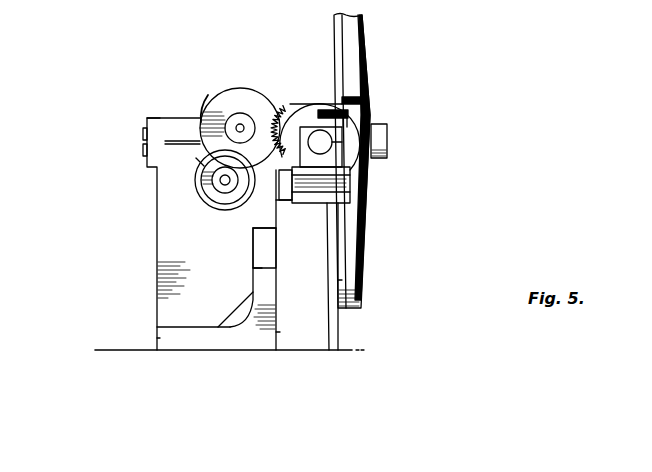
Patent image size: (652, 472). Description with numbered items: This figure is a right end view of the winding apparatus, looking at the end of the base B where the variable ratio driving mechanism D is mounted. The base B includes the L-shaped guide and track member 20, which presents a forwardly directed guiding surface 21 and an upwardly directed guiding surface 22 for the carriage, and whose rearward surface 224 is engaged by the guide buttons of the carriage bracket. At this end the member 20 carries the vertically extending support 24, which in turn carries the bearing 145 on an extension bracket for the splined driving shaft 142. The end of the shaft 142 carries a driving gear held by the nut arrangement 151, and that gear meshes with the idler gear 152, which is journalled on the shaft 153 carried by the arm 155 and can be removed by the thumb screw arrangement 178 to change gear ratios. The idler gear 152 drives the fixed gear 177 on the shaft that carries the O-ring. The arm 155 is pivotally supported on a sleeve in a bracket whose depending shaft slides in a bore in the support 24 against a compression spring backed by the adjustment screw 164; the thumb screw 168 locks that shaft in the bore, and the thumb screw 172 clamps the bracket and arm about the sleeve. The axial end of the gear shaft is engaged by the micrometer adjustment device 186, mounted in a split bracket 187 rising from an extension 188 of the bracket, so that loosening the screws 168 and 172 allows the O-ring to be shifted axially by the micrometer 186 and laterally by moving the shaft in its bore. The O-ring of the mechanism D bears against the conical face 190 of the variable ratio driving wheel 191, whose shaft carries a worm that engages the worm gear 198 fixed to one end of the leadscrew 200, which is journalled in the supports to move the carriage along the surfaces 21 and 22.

The guide and track member 20 is at (252, 283).
The forwardly directed guiding surface 21 is at (157, 338).
The upwardly directed guiding surface 22 is at (265, 248).
The vertically extending support 24 is at (157, 116).
The splined driving shaft 142 is at (220, 186).
The bearing 145 is at (196, 158).
The nut arrangement 151 is at (198, 183).
The idler gear 152 is at (200, 127).
The shaft 153 is at (243, 125).
The arm 155 is at (309, 110).
The adjustment screw 164 is at (145, 150).
The thumb screw 168 is at (205, 100).
The thumb screw 172 is at (362, 101).
The gear 177 is at (314, 96).
The thumb screw arrangement 178 is at (234, 104).
The micrometer adjustment device 186 is at (321, 143).
The split bracket 187 is at (372, 147).
The extension 188 is at (326, 205).
The conical face 190 is at (338, 280).
The variable ratio driving wheel 191 is at (363, 250).
The worm gear 198 is at (302, 204).
The leadscrew 200 is at (288, 180).
The rearward surface 224 is at (262, 268).
The base B is at (277, 332).
The variable ratio driving mechanism D is at (382, 60).